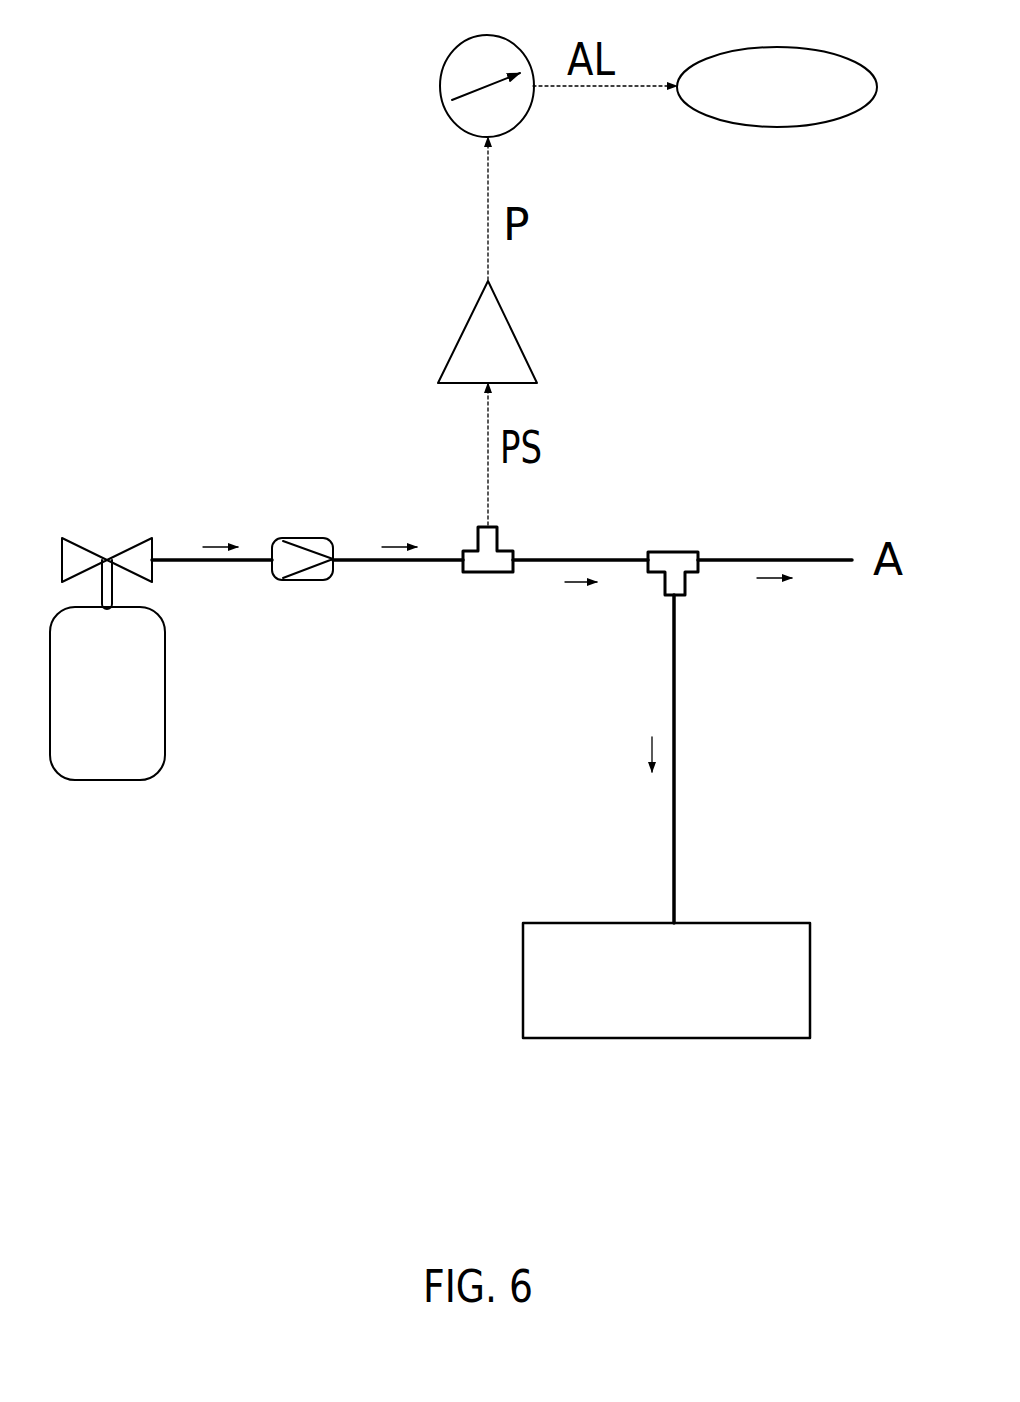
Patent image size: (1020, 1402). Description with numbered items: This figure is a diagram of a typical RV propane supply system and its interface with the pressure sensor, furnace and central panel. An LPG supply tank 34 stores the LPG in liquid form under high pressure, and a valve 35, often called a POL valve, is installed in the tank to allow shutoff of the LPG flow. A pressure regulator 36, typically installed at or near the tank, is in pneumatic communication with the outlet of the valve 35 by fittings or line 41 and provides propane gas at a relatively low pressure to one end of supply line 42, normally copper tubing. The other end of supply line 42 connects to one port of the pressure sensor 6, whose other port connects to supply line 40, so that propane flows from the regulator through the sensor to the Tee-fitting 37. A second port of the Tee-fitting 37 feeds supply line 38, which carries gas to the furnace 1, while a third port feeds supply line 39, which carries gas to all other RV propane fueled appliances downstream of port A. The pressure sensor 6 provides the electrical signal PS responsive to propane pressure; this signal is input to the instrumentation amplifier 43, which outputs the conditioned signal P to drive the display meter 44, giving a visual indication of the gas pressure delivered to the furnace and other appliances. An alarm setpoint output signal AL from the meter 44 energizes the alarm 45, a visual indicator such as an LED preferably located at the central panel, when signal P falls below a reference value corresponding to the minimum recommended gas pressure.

The furnace 1 is at (546, 1000).
The pressure sensor 6 is at (496, 666).
The LPG supply tank 34 is at (175, 737).
The valve 35 is at (137, 520).
The pressure regulator 36 is at (340, 509).
The Tee-fitting 37 is at (759, 638).
The supply line 38 is at (767, 759).
The supply line 39 is at (793, 509).
The supply line 40 is at (636, 475).
The fittings or line 41 is at (220, 618).
The supply line 42 is at (398, 621).
The instrumentation amplifier 43 is at (380, 332).
The display meter 44 is at (365, 77).
The alarm 45 is at (784, 162).